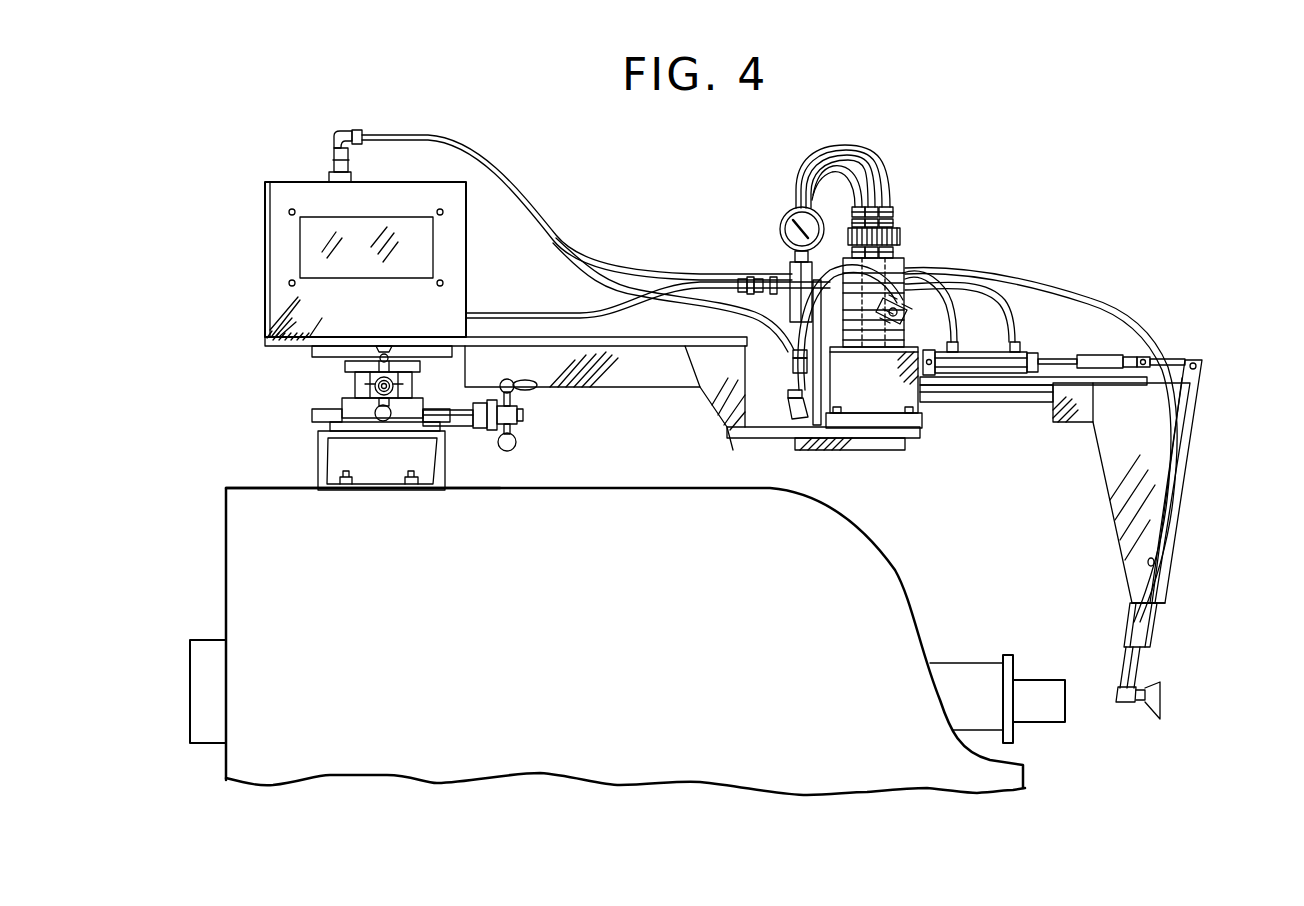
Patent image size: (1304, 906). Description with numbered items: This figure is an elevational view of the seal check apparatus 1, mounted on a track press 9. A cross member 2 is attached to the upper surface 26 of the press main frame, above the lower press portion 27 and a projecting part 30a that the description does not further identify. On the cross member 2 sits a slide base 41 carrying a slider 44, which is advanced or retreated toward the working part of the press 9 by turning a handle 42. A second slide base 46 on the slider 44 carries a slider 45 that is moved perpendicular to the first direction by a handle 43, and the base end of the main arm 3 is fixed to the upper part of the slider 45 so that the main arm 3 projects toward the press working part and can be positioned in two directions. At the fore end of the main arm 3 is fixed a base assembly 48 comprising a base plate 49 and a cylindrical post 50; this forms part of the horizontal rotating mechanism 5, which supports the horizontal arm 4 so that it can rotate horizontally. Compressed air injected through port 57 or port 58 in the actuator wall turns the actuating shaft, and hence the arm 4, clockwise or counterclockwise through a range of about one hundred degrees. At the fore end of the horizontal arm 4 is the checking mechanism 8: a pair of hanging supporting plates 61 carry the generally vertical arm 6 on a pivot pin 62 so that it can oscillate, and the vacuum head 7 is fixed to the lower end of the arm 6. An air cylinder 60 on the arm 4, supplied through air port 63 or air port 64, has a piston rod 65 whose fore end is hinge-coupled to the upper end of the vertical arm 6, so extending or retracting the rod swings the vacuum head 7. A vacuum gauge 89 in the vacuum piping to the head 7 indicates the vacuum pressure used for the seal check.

The seal check apparatus 1 is at (663, 262).
The cross member 2 is at (320, 458).
The main arm 3 is at (633, 390).
The horizontal arm 4 is at (1020, 392).
The horizontal rotating mechanism 5 is at (905, 259).
The vertical arm 6 is at (1155, 627).
The vacuum head 7 is at (1162, 695).
The checking mechanism 8 is at (1203, 416).
The track press 9 is at (210, 586).
The upper surface 26 is at (228, 488).
The base portion 27 is at (478, 765).
The shaft end 30a is at (1043, 695).
The slide base 41 is at (465, 425).
The handle 42 is at (515, 413).
The handle 43 is at (355, 378).
The slider 44 is at (320, 418).
The slider 45 is at (405, 378).
The slide base 46 is at (348, 408).
The base assembly 48 is at (880, 430).
The base plate 49 is at (910, 420).
The cylindrical post 50 is at (857, 400).
The port 57 is at (893, 318).
The port 58 is at (905, 300).
The air cylinder 60 is at (990, 362).
The hanging supporting plates 61 is at (1105, 483).
The pivot pin 62 is at (1160, 562).
The air port 63 is at (957, 345).
The air port 64 is at (1018, 342).
The piston rod 65 is at (1055, 362).
The vacuum gauge 89 is at (782, 225).